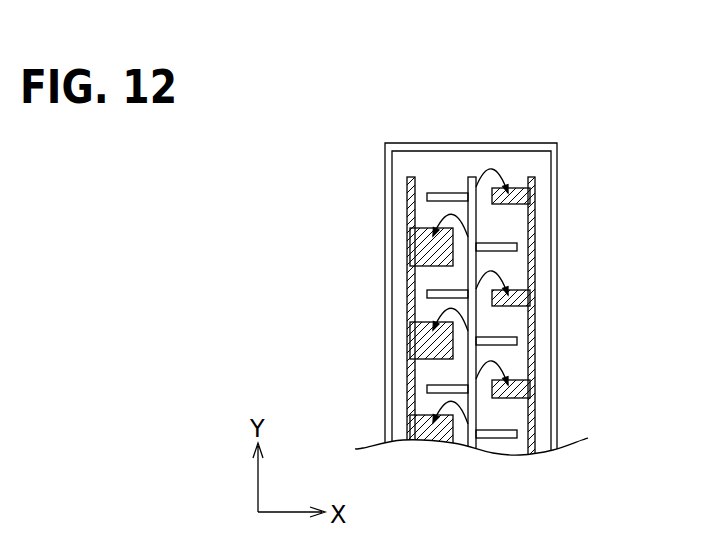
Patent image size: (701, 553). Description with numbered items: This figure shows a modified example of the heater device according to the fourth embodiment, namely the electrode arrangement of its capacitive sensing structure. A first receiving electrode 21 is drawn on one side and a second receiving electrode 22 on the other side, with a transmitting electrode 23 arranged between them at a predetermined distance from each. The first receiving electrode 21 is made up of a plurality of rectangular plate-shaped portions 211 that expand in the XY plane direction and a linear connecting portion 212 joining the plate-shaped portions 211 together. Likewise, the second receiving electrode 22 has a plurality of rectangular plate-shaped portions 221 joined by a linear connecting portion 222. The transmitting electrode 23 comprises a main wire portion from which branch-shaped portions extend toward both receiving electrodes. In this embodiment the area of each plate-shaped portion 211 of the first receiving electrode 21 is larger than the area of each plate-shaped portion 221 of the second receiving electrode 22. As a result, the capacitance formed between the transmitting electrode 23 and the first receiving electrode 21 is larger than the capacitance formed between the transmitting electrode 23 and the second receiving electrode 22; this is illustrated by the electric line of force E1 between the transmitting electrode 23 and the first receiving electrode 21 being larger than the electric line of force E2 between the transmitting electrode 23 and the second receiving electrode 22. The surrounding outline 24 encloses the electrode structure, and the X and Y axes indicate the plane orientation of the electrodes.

The first receiving electrode 21 is at (355, 322).
The plate-shaped portion 211 is at (430, 273).
The connecting portion 212 is at (408, 299).
The second receiving electrode 22 is at (585, 322).
The plate-shaped portion 221 is at (513, 399).
The connecting portion 222 is at (535, 345).
The transmitting electrode 23 is at (476, 315).
The frame 24 is at (553, 414).
The electric line of force E1 is at (437, 212).
The electric line of force E2 is at (486, 175).